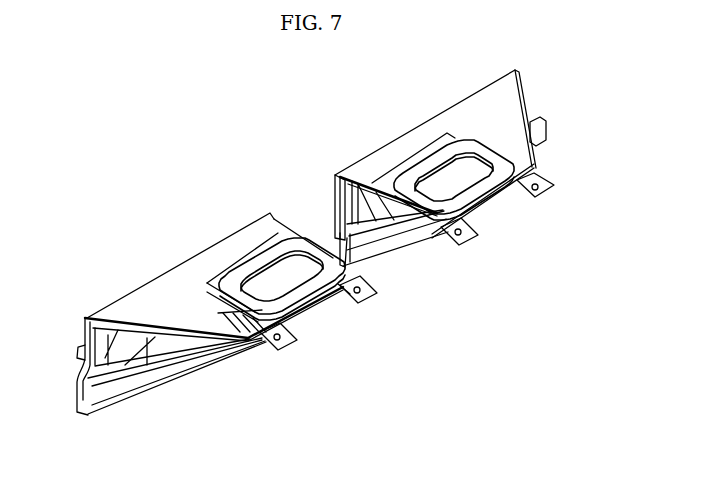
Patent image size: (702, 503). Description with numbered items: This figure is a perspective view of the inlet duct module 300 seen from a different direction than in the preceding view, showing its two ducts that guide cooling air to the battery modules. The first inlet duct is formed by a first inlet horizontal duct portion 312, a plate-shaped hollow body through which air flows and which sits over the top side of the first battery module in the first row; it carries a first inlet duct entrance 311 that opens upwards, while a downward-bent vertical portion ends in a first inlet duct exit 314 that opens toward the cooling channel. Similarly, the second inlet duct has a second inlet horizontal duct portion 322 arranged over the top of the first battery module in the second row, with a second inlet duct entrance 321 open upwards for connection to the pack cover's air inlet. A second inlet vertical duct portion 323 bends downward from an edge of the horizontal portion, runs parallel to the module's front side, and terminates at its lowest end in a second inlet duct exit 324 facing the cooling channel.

The inlet duct module 300 is at (249, 152).
The first inlet duct entrance 311 is at (272, 284).
The first inlet horizontal duct portion 312 is at (164, 294).
The first inlet duct exit 314 is at (108, 392).
The second inlet duct entrance 321 is at (447, 182).
The second inlet horizontal duct portion 322 is at (487, 108).
The second inlet vertical duct portion 323 is at (330, 200).
The second inlet duct exit 324 is at (366, 242).